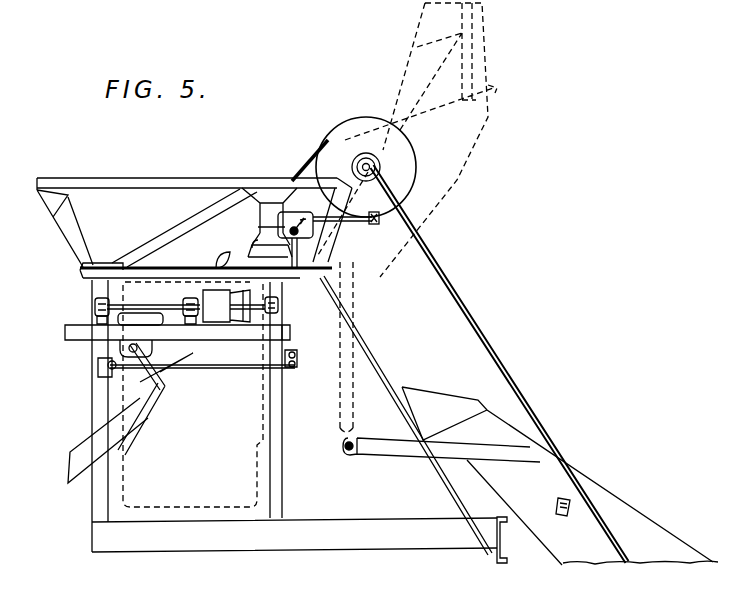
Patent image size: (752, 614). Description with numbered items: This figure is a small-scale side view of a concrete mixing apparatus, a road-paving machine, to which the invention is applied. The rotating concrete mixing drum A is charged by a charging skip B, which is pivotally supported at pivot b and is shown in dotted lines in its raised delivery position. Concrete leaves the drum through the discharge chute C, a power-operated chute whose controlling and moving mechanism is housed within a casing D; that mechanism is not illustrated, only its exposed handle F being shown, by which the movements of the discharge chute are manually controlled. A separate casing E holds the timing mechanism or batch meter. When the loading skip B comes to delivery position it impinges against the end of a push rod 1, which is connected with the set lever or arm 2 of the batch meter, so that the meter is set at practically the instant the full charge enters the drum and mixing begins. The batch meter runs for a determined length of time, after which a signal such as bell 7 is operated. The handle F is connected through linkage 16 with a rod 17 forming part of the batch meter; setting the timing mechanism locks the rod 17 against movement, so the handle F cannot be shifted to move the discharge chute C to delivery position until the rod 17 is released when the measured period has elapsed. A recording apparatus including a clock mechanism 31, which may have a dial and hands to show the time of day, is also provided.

The push rod 1 is at (374, 226).
The set lever or arm 2 is at (303, 218).
The bell 7 is at (338, 250).
The linkage 16 is at (232, 369).
The rod 17 is at (252, 242).
The clock mechanism 31 is at (257, 250).
The rotating concrete mixing drum A is at (192, 508).
The charging skip B is at (490, 117).
The discharge chute C is at (72, 446).
The casing D is at (87, 317).
The casing E is at (280, 220).
The handle F is at (143, 383).
The pivot b is at (340, 443).